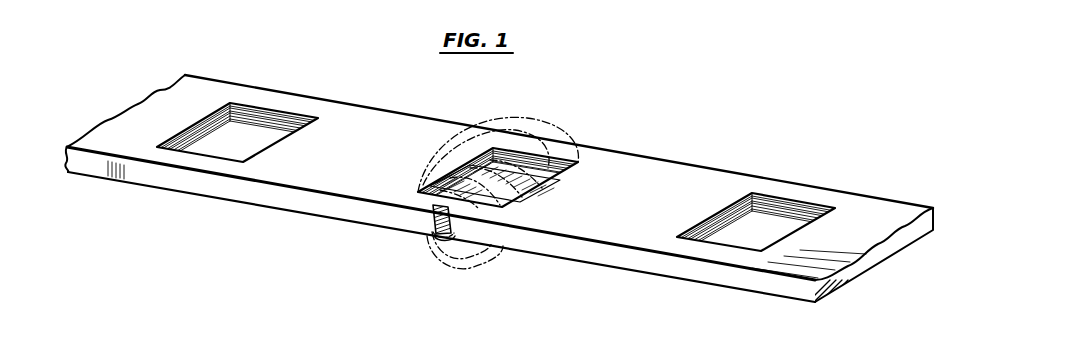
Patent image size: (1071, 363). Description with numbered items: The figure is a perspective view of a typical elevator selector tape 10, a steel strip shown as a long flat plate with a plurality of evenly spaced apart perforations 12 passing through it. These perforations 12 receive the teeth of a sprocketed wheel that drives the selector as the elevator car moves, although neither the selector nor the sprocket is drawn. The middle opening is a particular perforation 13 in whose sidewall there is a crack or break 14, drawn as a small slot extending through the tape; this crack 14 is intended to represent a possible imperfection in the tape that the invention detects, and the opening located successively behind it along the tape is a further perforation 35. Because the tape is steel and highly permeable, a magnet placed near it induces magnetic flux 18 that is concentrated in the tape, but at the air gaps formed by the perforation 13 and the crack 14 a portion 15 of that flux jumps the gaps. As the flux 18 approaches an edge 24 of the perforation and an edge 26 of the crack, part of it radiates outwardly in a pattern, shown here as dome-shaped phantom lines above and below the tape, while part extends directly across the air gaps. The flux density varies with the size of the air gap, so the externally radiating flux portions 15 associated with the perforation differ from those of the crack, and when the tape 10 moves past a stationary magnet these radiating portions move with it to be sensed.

The selector tape 10 is at (160, 105).
The perforations 12 is at (772, 222).
The perforation 35 is at (258, 148).
The perforation 13 is at (533, 186).
The crack 14 is at (430, 227).
The flux portion 15 is at (527, 118).
The magnetic flux 18 is at (460, 267).
The edge of the perforation 24 is at (486, 150).
The edge of the crack 26 is at (430, 223).